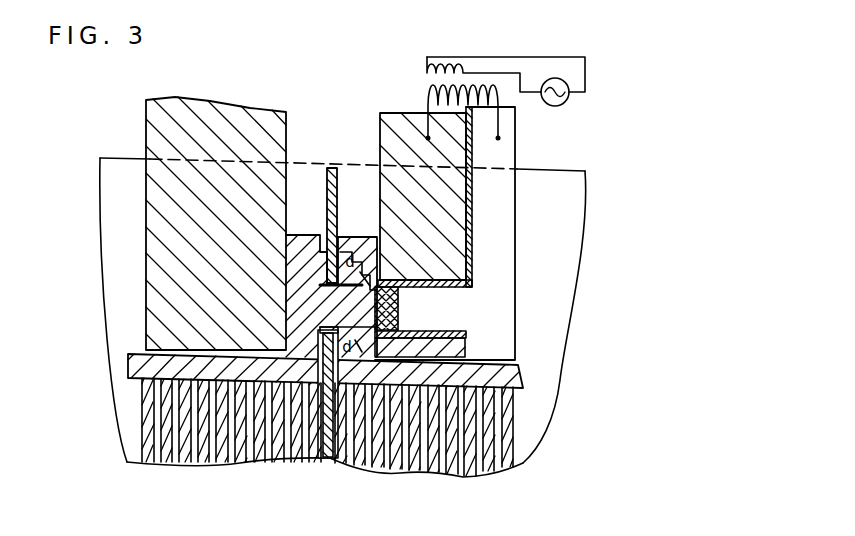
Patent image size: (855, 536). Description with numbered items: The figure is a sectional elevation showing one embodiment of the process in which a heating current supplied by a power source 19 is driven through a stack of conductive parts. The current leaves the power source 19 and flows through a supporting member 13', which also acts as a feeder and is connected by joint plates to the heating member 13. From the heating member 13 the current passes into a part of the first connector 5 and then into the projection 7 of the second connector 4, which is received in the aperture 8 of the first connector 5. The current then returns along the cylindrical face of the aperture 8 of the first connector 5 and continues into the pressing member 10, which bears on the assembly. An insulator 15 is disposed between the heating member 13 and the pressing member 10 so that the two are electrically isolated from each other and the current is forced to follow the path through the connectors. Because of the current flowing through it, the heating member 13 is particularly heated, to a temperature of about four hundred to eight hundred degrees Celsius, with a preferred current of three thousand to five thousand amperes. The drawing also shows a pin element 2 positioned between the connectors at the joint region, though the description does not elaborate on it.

The upper pin electrode 2 is at (336, 166).
The second connector 4 is at (305, 245).
The first connector 5 is at (365, 370).
The projection 7 is at (330, 300).
The aperture 8 is at (353, 284).
The pressing member 10 is at (396, 132).
The heating member 13 is at (423, 316).
The supporting member 13' is at (511, 233).
The insulator 15 is at (417, 285).
The power source 19 is at (485, 74).